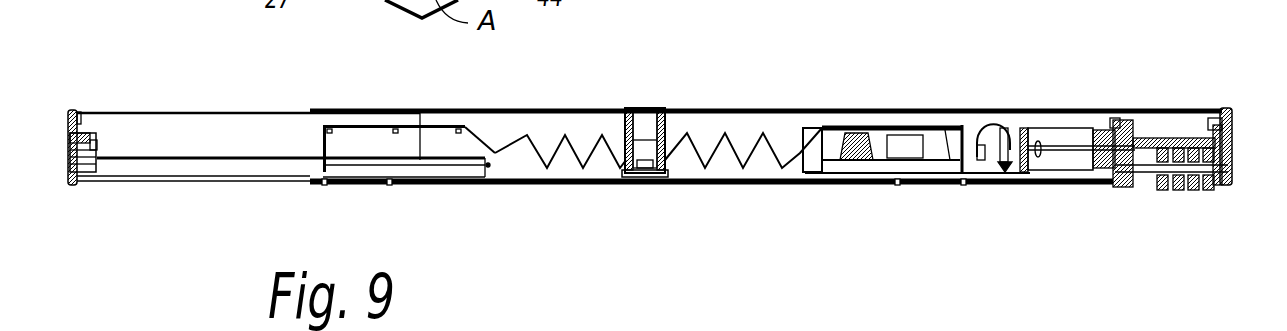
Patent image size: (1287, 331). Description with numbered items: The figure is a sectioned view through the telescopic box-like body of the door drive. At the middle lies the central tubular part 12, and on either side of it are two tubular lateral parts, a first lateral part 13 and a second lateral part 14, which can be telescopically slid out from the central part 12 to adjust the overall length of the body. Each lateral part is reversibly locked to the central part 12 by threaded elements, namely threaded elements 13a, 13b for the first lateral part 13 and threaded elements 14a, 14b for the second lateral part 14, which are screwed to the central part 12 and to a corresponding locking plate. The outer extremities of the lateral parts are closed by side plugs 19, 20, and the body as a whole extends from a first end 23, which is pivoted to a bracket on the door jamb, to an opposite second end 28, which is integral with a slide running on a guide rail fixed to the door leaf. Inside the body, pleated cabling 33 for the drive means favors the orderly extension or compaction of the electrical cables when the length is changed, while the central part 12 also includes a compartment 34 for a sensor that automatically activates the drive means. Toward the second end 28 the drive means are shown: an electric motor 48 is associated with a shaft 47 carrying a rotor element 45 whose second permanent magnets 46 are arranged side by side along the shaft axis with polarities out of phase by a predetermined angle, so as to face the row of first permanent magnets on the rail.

The central tubular part 12 is at (742, 110).
The first lateral part 13 is at (257, 118).
The threaded element 13a is at (325, 187).
The threaded element 13b is at (389, 188).
The second lateral part 14 is at (1040, 113).
The threaded element 14a is at (897, 187).
The threaded element 14b is at (965, 188).
The side plug 19 is at (55, 140).
The side plug 20 is at (1237, 153).
The first end 23 is at (125, 112).
The second end 28 is at (1163, 113).
The pleated cabling 33 is at (578, 135).
The compartment 34 is at (633, 150).
The rotor element 45 is at (1152, 195).
The second permanent magnets 46 is at (1207, 190).
The shaft 47 is at (1178, 165).
The electric motor 48 is at (1067, 135).